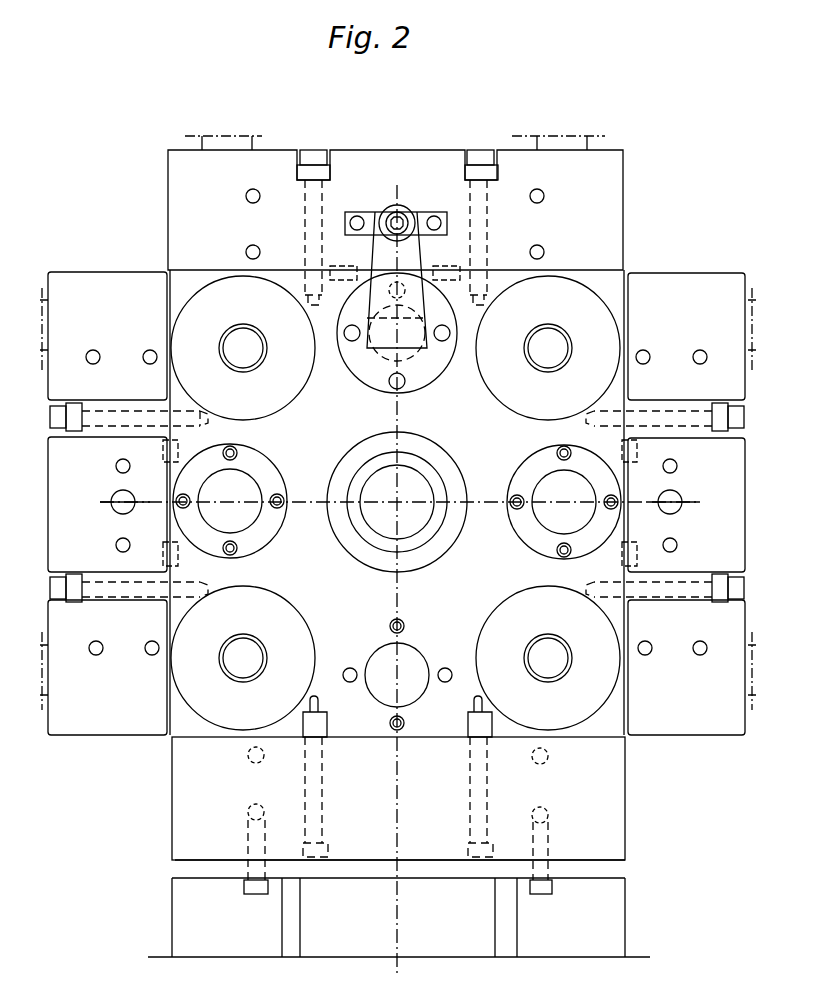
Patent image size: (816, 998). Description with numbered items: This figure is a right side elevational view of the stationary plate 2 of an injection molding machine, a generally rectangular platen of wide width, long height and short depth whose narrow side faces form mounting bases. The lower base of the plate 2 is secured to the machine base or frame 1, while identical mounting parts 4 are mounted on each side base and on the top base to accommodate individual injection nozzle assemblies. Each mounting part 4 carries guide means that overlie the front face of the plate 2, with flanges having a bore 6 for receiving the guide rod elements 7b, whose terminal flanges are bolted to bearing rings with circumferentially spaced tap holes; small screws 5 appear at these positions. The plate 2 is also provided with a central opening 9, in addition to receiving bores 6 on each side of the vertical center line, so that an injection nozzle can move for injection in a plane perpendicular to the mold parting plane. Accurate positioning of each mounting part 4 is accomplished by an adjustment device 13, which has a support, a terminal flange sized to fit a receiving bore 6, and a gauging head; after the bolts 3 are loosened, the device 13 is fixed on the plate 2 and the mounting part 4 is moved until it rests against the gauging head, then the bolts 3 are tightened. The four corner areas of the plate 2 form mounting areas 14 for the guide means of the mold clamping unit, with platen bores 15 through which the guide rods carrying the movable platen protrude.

The base or frame 1 is at (612, 870).
The stationary plate 2 is at (446, 740).
The bolts 3 is at (313, 152).
The mounting parts 4 is at (604, 194).
The screws 5 is at (236, 554).
The bore 6 is at (254, 516).
The guide rod elements 7b is at (262, 150).
The central opening 9 is at (372, 530).
The adjustment device 13 is at (400, 206).
The mounting areas 14 is at (275, 392).
The platen bores 15 is at (229, 362).